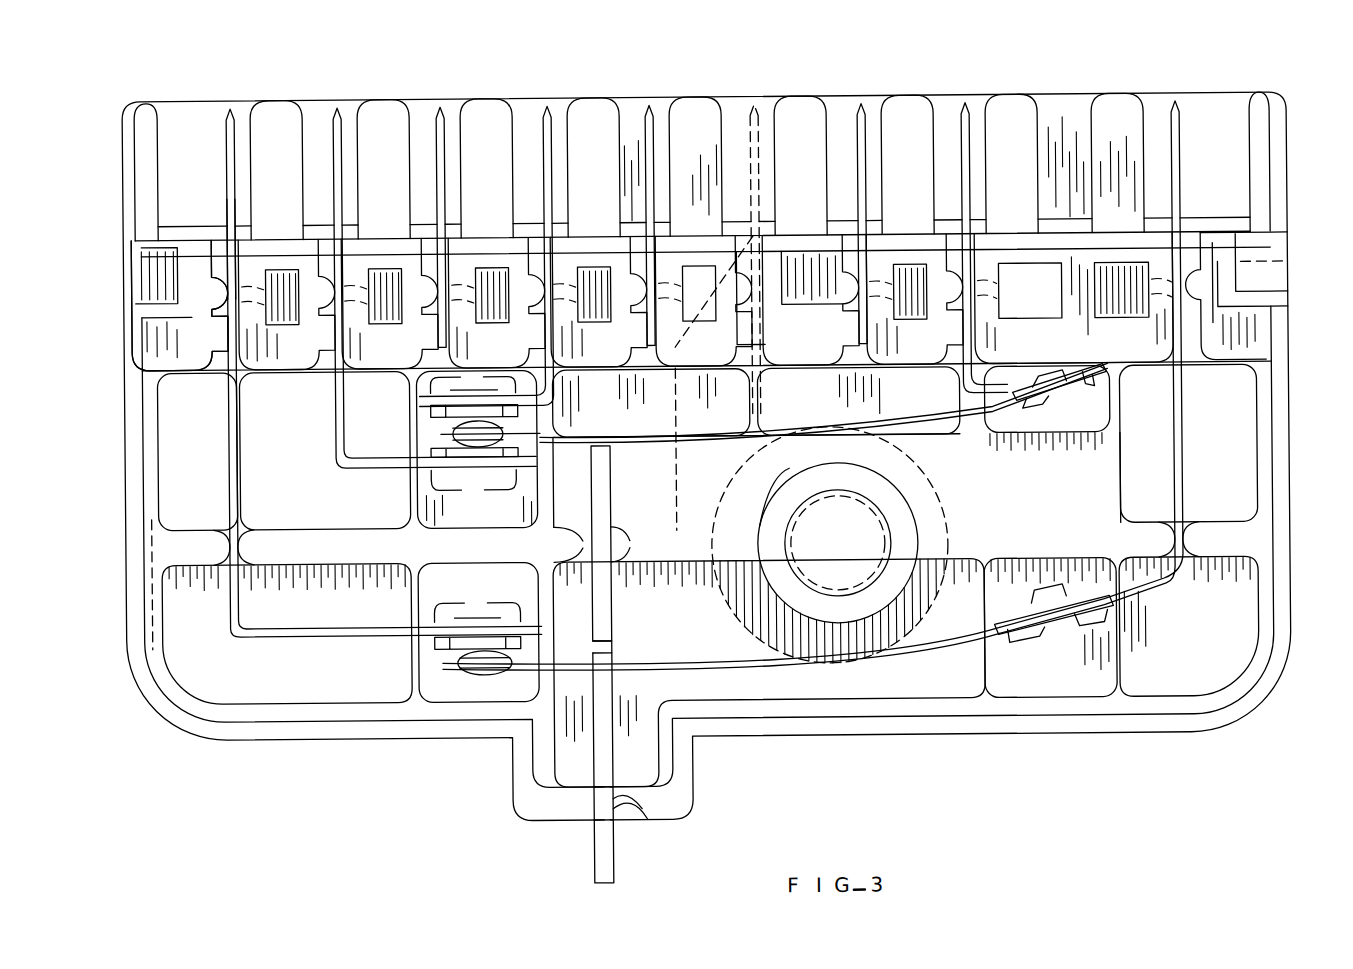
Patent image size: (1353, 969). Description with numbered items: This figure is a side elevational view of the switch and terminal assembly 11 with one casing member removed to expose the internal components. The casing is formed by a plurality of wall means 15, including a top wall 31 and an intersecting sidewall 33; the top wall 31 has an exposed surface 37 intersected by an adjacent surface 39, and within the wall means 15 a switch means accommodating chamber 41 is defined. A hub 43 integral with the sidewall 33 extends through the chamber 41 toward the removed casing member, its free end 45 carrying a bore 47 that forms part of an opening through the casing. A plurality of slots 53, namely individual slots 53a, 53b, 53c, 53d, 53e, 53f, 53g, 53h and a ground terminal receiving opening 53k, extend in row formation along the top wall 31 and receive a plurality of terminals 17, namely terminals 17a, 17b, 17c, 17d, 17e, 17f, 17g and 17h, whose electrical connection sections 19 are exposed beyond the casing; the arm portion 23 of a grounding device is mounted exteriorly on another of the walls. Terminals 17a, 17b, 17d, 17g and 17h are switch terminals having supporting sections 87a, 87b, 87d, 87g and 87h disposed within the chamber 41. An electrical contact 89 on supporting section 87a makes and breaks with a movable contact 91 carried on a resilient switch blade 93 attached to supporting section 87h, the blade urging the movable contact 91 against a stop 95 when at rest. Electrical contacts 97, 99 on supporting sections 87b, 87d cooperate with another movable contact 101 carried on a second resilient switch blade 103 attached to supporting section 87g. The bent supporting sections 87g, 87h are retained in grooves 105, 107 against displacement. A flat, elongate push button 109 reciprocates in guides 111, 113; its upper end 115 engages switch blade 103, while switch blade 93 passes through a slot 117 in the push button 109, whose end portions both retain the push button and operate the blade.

The switch and terminal assembly 11 is at (1322, 102).
The wall means 15 is at (1299, 387).
The terminals 17 is at (1020, 82).
The electrical terminal 17a is at (226, 113).
The electrical terminal 17b is at (333, 113).
The electrical terminal 17c is at (436, 113).
The electrical terminal 17d is at (543, 113).
The electrical terminal 17e is at (645, 113).
The electrical terminal 17f is at (857, 113).
The electrical terminal 17g is at (961, 113).
The electrical terminal 17h is at (1171, 113).
The electrical connection sections 19 is at (333, 161).
The arm portion 23 is at (944, 513).
The top wall 31 is at (1224, 252).
The sidewall 33 is at (1238, 409).
The exposed surface 37 is at (1227, 249).
The adjacent surface 39 is at (1253, 336).
The switch means accommodating chamber 41 is at (1049, 496).
The hub 43 is at (902, 485).
The free end 45 is at (902, 517).
The bore 47 is at (791, 521).
The slots 53 is at (194, 192).
The slot 53a is at (209, 250).
The slot 53b is at (314, 259).
The slot 53c is at (417, 259).
The slot 53d is at (524, 259).
The slot 53e is at (626, 259).
The slot 53f is at (819, 254).
The slot 53g is at (942, 260).
The slot 53h is at (1149, 254).
The ground terminal receiving opening 53k is at (709, 257).
The supporting section 87a is at (229, 422).
The supporting section 87b is at (334, 421).
The supporting section 87d is at (550, 399).
The supporting section 87g is at (962, 387).
The supporting section 87h is at (1182, 450).
The electrical contact 89 is at (473, 628).
The movable contact 91 is at (476, 678).
The resilient switch blade 93 is at (890, 657).
The stop 95 is at (407, 674).
The electrical contact 97 is at (475, 468).
The electrical contact 99 is at (476, 398).
The movable contact 101 is at (408, 435).
The resilient switch blade 103 is at (767, 441).
The groove 105 is at (1010, 396).
The groove 107 is at (1015, 640).
The push button 109 is at (593, 862).
The guide 111 is at (620, 815).
The guide 113 is at (621, 560).
The upper end 115 is at (603, 464).
The slot 117 is at (603, 683).